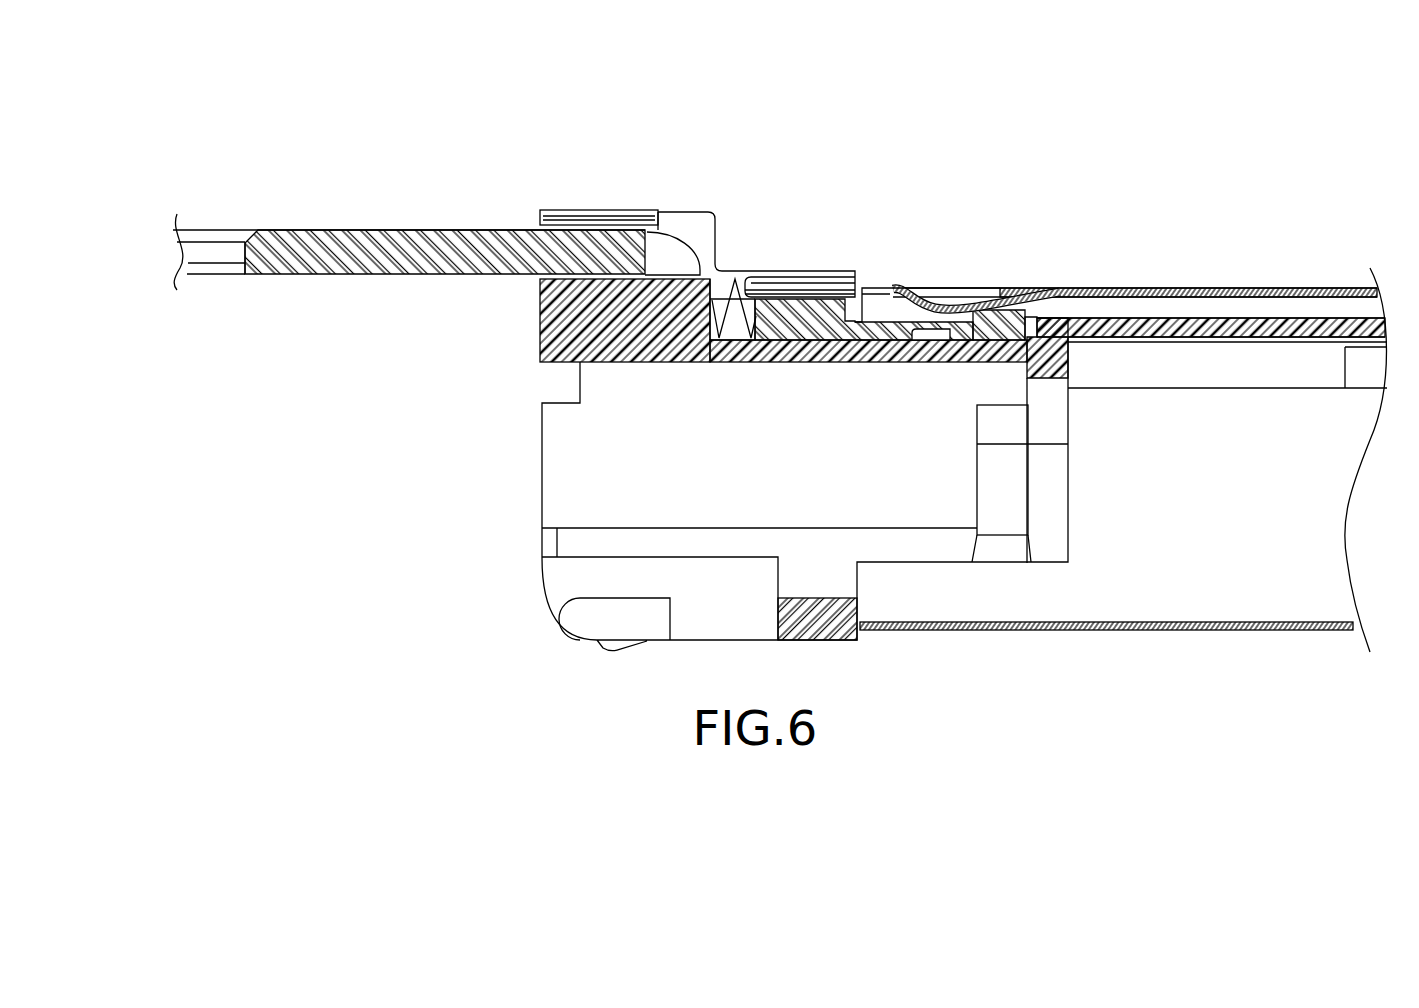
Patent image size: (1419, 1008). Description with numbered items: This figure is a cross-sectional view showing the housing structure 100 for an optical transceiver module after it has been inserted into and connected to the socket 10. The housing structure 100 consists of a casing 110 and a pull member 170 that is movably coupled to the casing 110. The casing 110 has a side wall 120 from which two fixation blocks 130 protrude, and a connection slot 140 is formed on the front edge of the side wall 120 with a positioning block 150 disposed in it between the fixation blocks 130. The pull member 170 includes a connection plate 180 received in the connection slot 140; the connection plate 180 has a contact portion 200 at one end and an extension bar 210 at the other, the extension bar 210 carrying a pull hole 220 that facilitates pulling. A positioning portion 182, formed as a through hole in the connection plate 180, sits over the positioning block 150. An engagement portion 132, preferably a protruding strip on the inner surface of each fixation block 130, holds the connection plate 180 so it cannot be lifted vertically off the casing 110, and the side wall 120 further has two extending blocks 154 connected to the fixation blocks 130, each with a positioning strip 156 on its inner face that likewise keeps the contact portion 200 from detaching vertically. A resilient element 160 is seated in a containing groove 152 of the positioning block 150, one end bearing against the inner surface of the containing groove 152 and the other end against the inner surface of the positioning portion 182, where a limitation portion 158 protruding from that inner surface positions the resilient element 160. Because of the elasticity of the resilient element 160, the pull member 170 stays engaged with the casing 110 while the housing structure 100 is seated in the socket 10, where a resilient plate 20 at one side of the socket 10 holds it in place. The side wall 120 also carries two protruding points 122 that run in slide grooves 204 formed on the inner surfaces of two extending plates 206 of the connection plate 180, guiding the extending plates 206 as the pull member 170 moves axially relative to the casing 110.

The socket 10 is at (1167, 288).
The resilient plate 20 is at (987, 307).
The housing structure 100 is at (510, 140).
The casing 110 is at (562, 483).
The side wall 120 is at (1225, 320).
The protruding points 122 is at (908, 332).
The fixation blocks 130 is at (670, 213).
The engagement portion 132 is at (592, 215).
The connection slot 140 is at (1033, 327).
The positioning block 150 is at (670, 362).
The containing groove 152 is at (724, 352).
The extending blocks 154 is at (819, 282).
The positioning strip 156 is at (795, 282).
The limitation portion 158 is at (752, 276).
The resilient element 160 is at (745, 345).
The pull member 170 is at (318, 226).
The connection plate 180 is at (683, 228).
The positioning portion 182 is at (682, 258).
The contact portion 200 is at (888, 322).
The slide grooves 204 is at (933, 332).
The extending plates 206 is at (1007, 317).
The extension bar 210 is at (415, 248).
The pull hole 220 is at (210, 250).